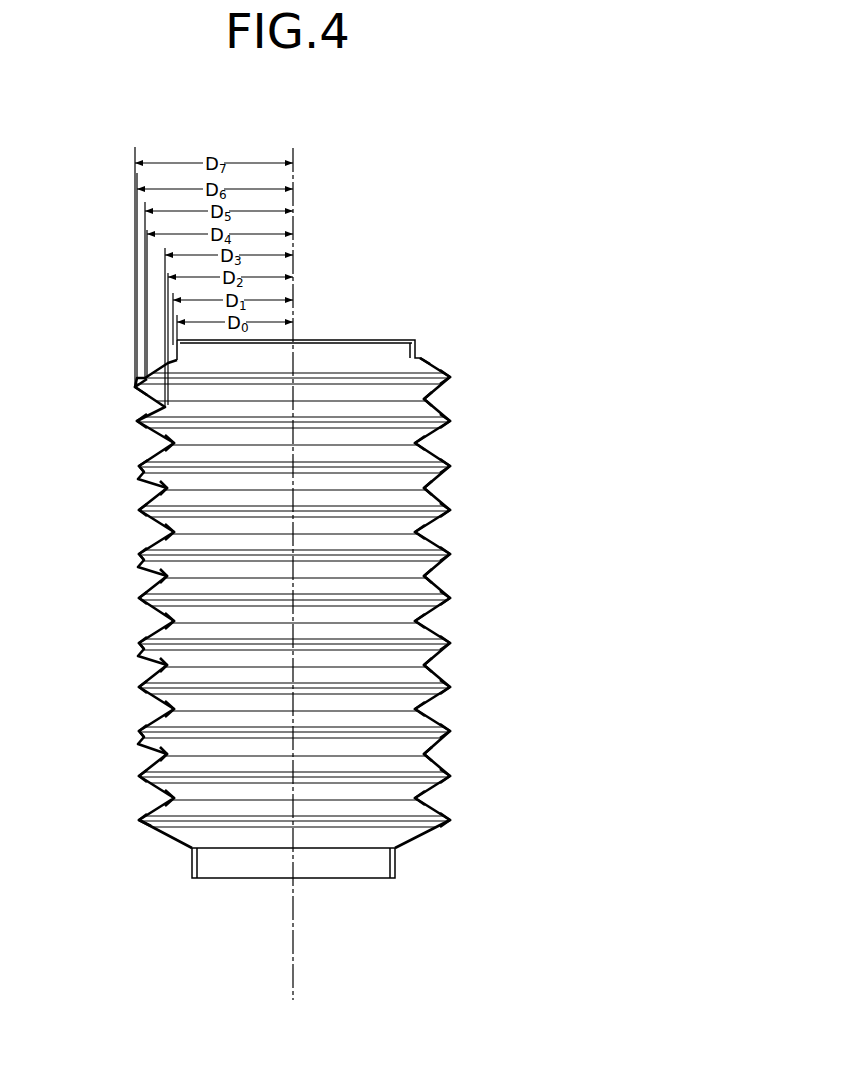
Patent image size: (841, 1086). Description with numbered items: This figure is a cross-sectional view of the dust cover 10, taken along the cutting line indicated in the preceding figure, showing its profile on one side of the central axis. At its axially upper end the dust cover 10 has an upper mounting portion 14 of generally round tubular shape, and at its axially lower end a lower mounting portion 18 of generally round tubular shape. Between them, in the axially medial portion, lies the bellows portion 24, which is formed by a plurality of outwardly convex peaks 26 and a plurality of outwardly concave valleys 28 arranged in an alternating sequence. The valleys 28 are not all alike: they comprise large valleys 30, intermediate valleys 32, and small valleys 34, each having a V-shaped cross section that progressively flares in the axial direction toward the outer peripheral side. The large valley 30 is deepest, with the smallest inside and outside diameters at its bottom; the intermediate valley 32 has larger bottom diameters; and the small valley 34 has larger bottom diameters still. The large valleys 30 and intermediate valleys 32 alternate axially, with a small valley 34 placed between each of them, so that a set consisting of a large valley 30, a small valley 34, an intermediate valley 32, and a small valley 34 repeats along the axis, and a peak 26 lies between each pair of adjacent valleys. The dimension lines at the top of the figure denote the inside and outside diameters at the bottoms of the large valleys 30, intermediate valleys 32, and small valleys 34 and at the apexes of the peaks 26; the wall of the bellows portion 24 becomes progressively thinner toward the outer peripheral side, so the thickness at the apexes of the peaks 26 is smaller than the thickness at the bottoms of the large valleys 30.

The dust cover 10 is at (118, 338).
The upper mounting portion 14 is at (424, 350).
The lower mounting portion 18 is at (404, 865).
The bellows portion 24 is at (118, 562).
The peaks 26 is at (130, 384).
The valleys 28 is at (170, 445).
The large valleys 30 is at (445, 574).
The intermediate valleys 32 is at (453, 575).
The small valleys 34 is at (470, 600).